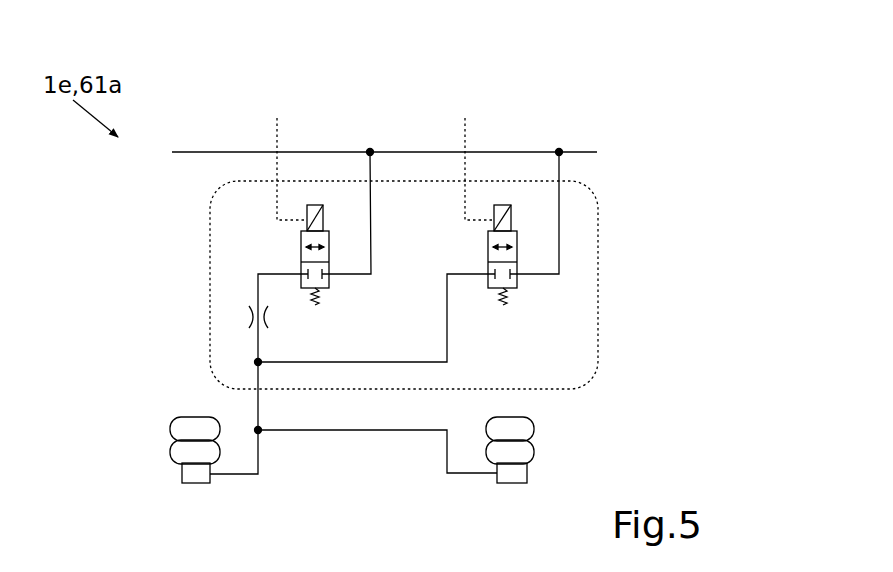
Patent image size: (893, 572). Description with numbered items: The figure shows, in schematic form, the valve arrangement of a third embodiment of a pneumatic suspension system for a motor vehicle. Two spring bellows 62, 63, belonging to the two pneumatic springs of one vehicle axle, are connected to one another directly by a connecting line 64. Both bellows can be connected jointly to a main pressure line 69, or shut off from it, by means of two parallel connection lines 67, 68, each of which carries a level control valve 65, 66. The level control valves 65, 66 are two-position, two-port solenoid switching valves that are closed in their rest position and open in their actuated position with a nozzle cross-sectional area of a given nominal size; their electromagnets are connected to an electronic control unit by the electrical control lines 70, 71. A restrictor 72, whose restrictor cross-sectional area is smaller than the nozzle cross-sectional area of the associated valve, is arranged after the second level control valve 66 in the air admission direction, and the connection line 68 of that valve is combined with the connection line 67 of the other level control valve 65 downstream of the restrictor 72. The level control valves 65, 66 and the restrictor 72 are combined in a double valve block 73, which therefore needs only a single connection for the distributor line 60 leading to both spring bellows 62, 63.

The main pressure line 69 is at (213, 152).
The electrical control line 71 is at (280, 142).
The connection line 68 is at (372, 208).
The electrical control line 70 is at (465, 143).
The connection line 67 is at (561, 206).
The level control valve 66 is at (285, 259).
The level control valve 65 is at (531, 258).
The double valve block 73 is at (599, 318).
The restrictor 72 is at (239, 320).
The distributor line 60 is at (252, 409).
The spring bellows 62 is at (181, 431).
The spring bellows 63 is at (522, 427).
The connecting line 64 is at (355, 431).